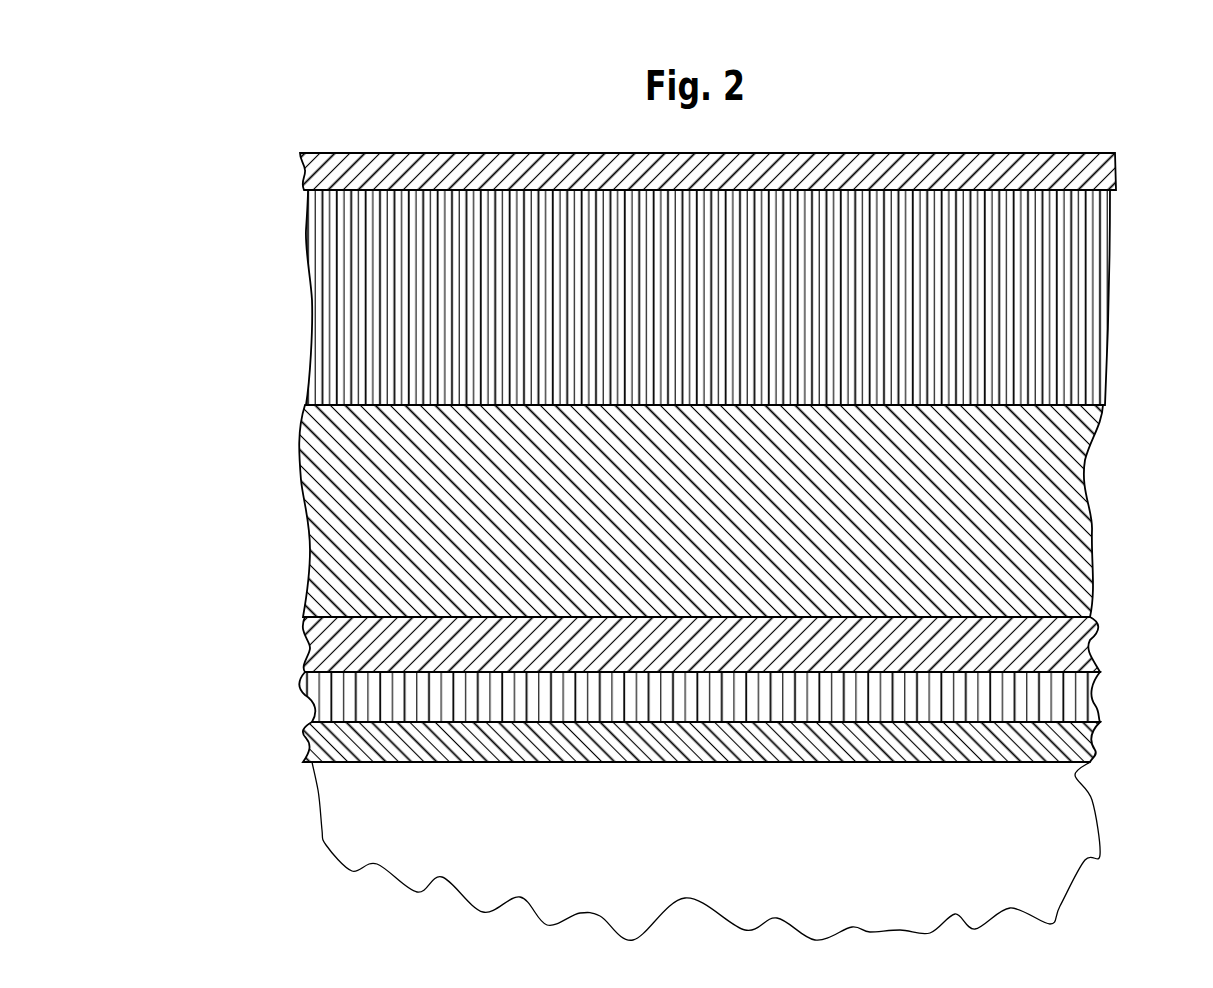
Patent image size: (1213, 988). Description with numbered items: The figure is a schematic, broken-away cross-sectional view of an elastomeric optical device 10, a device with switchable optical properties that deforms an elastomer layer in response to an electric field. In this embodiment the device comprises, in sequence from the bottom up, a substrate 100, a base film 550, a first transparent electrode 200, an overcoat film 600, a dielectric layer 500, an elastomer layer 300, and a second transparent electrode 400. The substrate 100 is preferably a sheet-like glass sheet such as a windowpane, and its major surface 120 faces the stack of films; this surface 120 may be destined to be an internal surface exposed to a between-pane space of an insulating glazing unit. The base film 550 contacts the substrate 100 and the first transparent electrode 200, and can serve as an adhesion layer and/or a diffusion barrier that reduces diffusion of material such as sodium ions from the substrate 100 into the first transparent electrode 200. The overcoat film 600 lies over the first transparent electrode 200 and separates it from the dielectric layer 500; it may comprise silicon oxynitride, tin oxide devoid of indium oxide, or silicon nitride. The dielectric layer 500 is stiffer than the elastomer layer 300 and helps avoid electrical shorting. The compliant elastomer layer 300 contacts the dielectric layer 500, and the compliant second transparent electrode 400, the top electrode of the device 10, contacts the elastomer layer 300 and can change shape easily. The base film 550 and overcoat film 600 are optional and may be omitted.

The elastomeric optical device 10 is at (262, 112).
The substrate 100 is at (1052, 842).
The surface 120 is at (378, 762).
The first transparent electrode 200 is at (1057, 707).
The elastomer layer 300 is at (1082, 274).
The second transparent electrode 400 is at (1095, 176).
The dielectric layer 500 is at (1065, 512).
The base film 550 is at (1060, 745).
The overcoat film 600 is at (1057, 642).